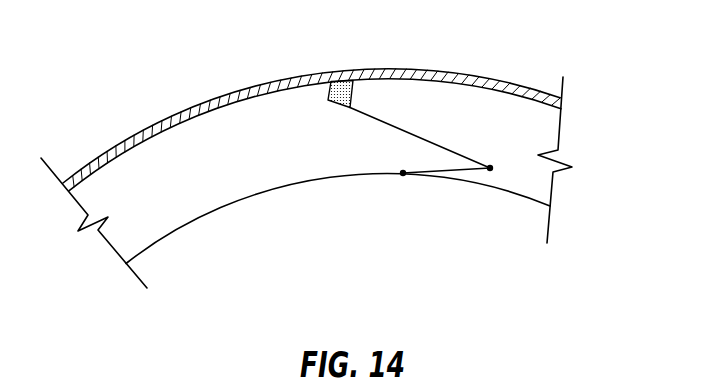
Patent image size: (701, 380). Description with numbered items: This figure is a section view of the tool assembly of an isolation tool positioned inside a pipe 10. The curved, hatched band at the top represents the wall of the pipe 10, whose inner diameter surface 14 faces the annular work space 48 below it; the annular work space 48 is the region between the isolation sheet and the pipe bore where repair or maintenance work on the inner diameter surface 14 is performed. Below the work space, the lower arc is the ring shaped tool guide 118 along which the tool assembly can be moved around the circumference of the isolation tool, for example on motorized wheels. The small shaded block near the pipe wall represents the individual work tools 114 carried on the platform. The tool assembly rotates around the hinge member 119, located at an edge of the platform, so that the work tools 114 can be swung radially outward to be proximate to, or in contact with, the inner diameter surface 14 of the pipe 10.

The pipe 10 is at (428, 70).
The inner diameter surface 14 is at (233, 118).
The annular work space 48 is at (164, 197).
The tools 114 is at (347, 83).
The tool guide 118 is at (217, 210).
The hinge member 119 is at (490, 168).